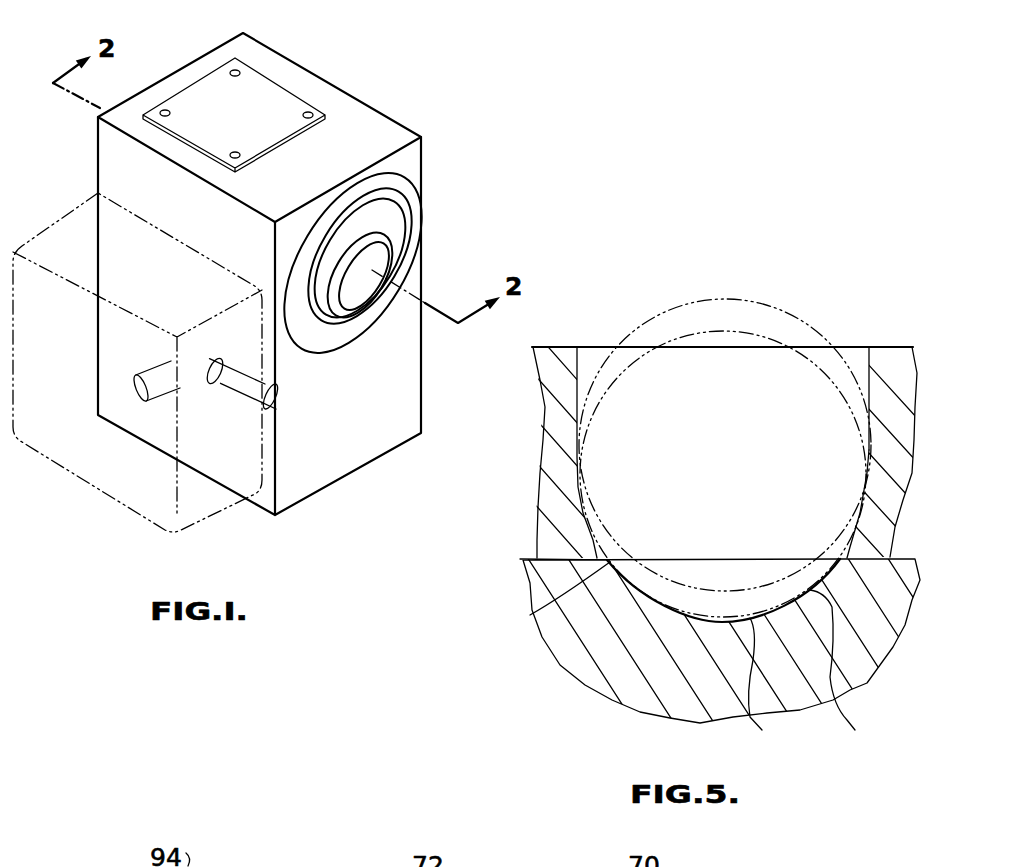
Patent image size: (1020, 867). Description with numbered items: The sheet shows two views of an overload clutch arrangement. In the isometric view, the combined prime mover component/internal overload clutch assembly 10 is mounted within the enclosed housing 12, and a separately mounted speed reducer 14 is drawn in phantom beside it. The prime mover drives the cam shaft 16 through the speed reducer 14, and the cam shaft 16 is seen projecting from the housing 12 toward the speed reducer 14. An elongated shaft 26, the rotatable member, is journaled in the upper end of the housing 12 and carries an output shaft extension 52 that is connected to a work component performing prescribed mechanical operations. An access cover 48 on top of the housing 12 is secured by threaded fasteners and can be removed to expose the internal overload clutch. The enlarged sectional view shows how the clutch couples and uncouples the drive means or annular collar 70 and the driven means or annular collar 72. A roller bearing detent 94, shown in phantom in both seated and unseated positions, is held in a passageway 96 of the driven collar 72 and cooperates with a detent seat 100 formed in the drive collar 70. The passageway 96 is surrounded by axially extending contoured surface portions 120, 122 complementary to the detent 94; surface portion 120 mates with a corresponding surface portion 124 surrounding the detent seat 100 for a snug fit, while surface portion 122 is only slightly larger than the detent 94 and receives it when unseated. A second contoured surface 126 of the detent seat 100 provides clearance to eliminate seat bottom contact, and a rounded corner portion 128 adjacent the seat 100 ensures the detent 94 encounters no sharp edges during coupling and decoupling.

In FIG. 1, the combined prime mover component/internal overload clutch assembly 10 is at (364, 95).
In FIG. 1, the housing 12 is at (376, 142).
In FIG. 1, the speed reducer 14 is at (125, 505).
In FIG. 1, the cam shaft 16 is at (160, 362).
In FIG. 1, the elongated shaft 26 is at (393, 274).
In FIG. 1, the access cover 48 is at (258, 108).
In FIG. 1, the output shaft extension 52 is at (387, 212).
In FIG. 5, the drive means or annular collar 70 is at (564, 649).
In FIG. 5, the driven means or annular collar 72 is at (550, 475).
In FIG. 5, the roller bearing detent 94 is at (784, 307).
In FIG. 5, the passageway 96 is at (861, 356).
In FIG. 5, the detent seat 100 is at (643, 593).
In FIG. 5, the complementary contoured surface portion 120 is at (862, 482).
In FIG. 5, the complementary contoured surface portion 122 is at (868, 423).
In FIG. 5, the surface portion 124 is at (855, 730).
In FIG. 5, the second contoured surface 126 is at (762, 730).
In FIG. 5, the rounded corner portion 128 is at (530, 614).